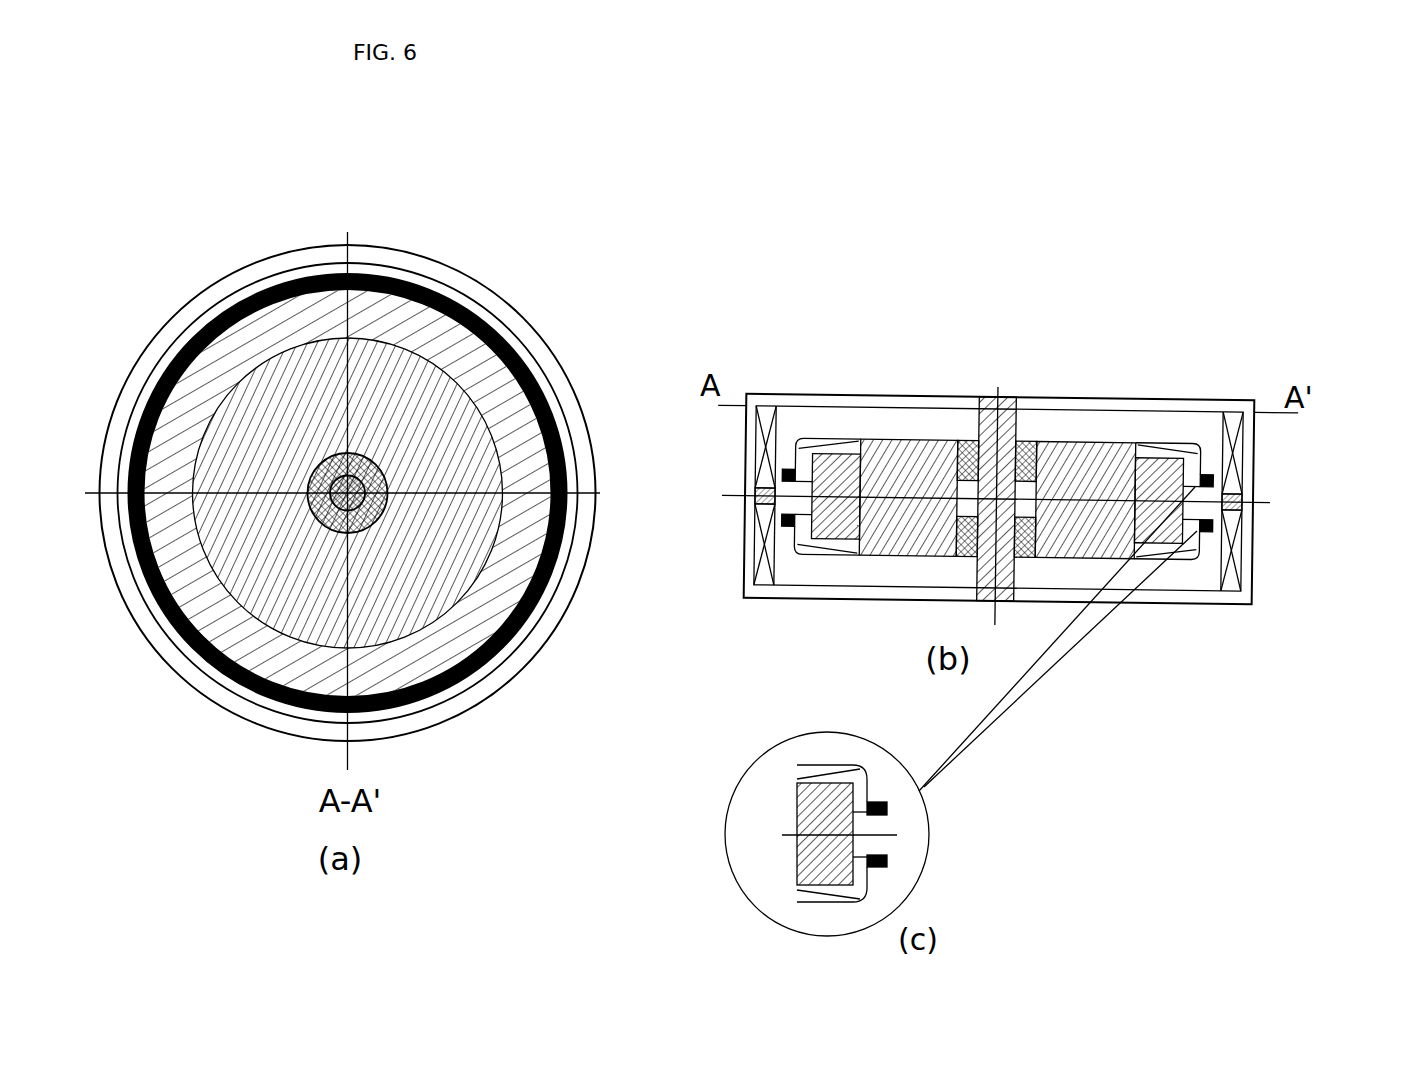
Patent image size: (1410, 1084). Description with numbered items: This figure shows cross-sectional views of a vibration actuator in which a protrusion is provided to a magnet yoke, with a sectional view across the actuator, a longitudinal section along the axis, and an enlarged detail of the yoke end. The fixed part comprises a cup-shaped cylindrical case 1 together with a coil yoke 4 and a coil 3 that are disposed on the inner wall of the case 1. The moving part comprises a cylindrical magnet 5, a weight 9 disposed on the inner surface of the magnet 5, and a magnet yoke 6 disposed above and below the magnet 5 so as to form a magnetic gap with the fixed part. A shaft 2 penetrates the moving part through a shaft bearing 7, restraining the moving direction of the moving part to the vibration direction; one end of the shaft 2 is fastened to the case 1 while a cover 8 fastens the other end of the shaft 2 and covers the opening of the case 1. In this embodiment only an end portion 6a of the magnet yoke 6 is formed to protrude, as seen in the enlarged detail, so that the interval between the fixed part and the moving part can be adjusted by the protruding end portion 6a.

The case 1 is at (186, 316).
The shaft 2 is at (388, 402).
The coil 3 is at (762, 413).
The coil yoke 4 is at (786, 447).
The magnet 5 is at (1160, 447).
The magnet yoke 6 is at (247, 330).
The end portion of the magnet yoke 6a is at (497, 336).
The shaft bearing 7 is at (350, 454).
The cover 8 is at (892, 405).
The weight 9 is at (292, 370).